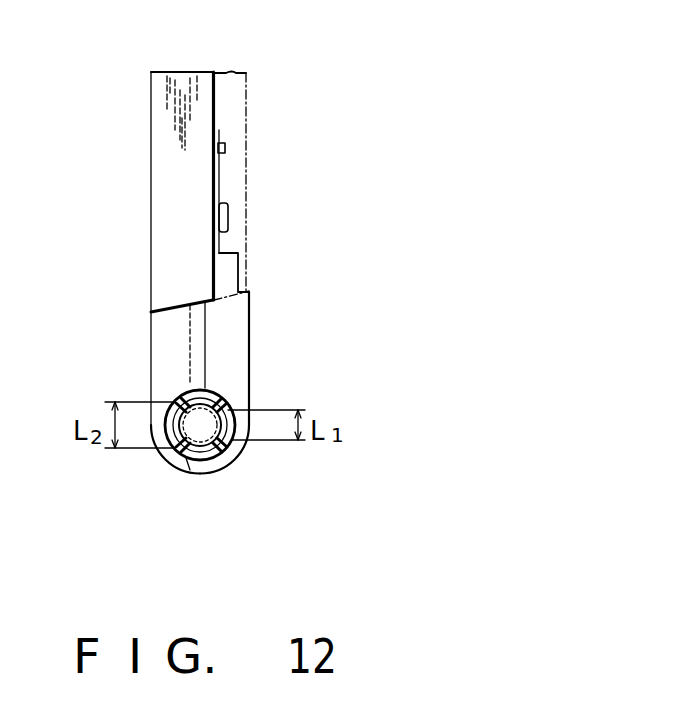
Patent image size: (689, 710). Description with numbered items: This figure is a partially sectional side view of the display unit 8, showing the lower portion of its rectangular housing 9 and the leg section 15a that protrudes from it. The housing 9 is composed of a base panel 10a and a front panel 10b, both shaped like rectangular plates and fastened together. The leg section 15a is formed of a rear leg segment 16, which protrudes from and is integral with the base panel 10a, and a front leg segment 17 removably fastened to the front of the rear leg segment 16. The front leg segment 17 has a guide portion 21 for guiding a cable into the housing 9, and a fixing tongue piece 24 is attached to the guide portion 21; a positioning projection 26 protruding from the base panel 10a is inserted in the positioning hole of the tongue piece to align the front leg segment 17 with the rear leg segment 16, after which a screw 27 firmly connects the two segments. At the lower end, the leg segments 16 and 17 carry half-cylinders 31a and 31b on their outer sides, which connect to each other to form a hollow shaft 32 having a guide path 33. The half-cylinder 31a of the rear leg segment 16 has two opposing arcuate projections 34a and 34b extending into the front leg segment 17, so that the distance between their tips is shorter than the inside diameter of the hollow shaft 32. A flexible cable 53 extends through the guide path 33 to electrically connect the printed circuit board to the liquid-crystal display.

The display unit 8 is at (252, 122).
The housing 9 is at (150, 83).
The base panel 10a is at (156, 118).
The front panel 10b is at (232, 75).
The leg section 15a is at (249, 308).
The rear leg segment 16 is at (157, 327).
The front leg segment 17 is at (242, 345).
The guide portion 21 is at (233, 267).
The fixing tongue piece 24 is at (212, 174).
The positioning projection 26 is at (225, 148).
The screw 27 is at (228, 217).
The half-cylinder 31a is at (163, 448).
The half-cylinder 31b is at (243, 432).
The hollow shaft 32 is at (190, 400).
The guide path 33 is at (225, 392).
The arcuate projection 34a is at (223, 398).
The arcuate projection 34b is at (227, 467).
The cable 53 is at (188, 474).